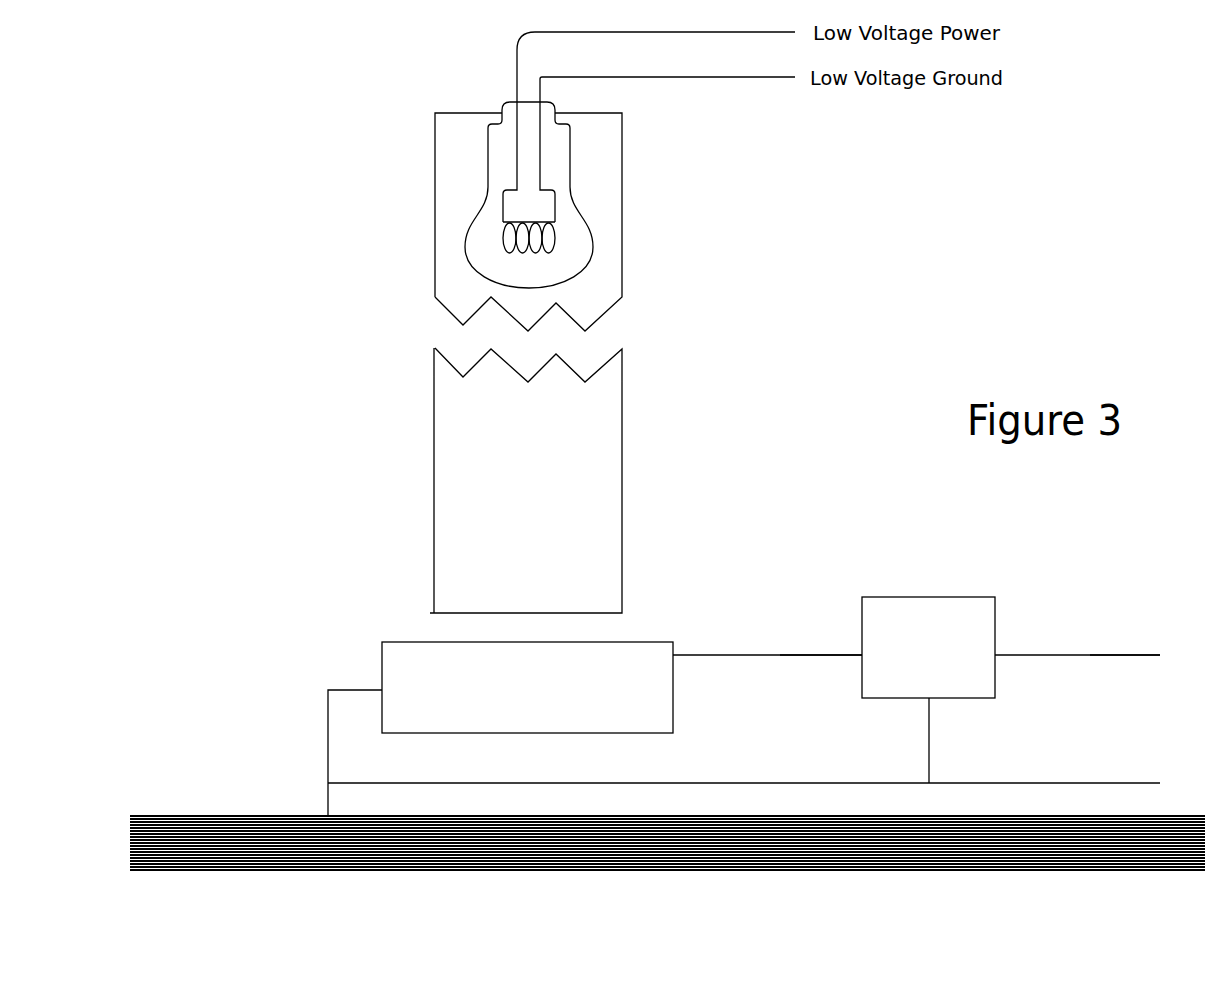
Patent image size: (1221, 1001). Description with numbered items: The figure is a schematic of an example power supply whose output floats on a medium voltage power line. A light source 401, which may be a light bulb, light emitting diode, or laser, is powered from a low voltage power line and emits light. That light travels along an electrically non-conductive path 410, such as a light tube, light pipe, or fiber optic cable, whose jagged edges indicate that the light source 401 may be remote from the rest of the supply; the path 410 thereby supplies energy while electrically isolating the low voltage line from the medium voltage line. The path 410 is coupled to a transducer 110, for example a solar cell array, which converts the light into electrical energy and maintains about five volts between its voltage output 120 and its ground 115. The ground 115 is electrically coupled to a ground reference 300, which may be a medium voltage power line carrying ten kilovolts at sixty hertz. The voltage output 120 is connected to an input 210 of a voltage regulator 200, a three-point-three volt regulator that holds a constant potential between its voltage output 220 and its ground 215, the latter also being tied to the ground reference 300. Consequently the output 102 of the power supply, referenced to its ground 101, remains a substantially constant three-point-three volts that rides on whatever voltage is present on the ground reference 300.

The ground 101 is at (1148, 780).
The output 102 is at (1148, 653).
The transducer 110 is at (428, 640).
The ground 115 is at (359, 687).
The voltage output 120 is at (688, 646).
The voltage regulator 200 is at (929, 597).
The input 210 is at (854, 653).
The ground 215 is at (933, 707).
The voltage output 220 is at (1013, 654).
The ground reference 300 is at (228, 815).
The light source 401 is at (593, 259).
The electrically non-conductive path 410 is at (626, 295).